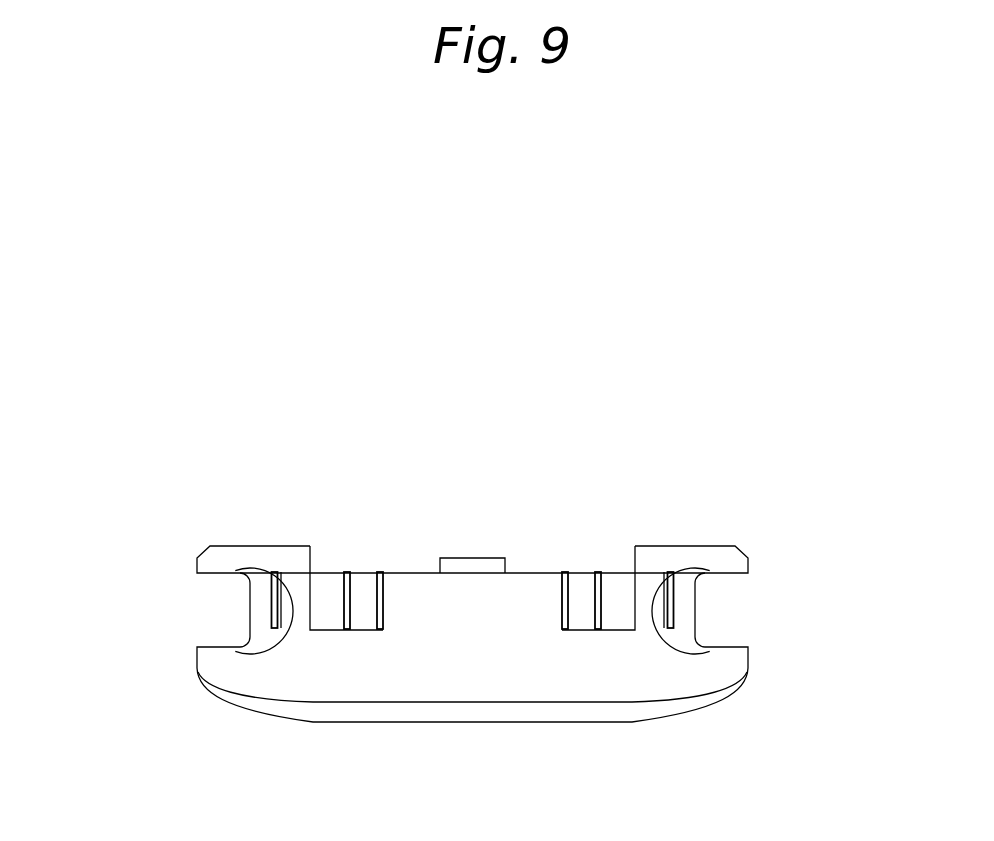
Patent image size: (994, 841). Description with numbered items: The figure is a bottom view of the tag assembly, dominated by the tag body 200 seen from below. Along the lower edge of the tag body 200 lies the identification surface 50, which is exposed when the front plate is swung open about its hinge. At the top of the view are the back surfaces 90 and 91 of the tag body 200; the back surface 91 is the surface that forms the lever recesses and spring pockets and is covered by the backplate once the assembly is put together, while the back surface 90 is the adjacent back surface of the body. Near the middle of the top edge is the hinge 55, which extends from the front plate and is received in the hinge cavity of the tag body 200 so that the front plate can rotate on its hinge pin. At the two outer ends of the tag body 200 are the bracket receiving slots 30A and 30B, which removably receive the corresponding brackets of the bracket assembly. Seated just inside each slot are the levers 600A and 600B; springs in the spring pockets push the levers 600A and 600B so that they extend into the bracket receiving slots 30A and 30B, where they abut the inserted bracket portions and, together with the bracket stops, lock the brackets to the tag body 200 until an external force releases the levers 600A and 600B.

The tag body 200 is at (122, 363).
The bracket receiving slot 30A is at (240, 611).
The bracket receiving slot 30B is at (708, 610).
The lever 600A is at (288, 612).
The lever 600B is at (658, 612).
The back surface 91 is at (410, 582).
The back surface 90 is at (677, 547).
The hinge 55 is at (475, 552).
The identification surface 50 is at (527, 722).